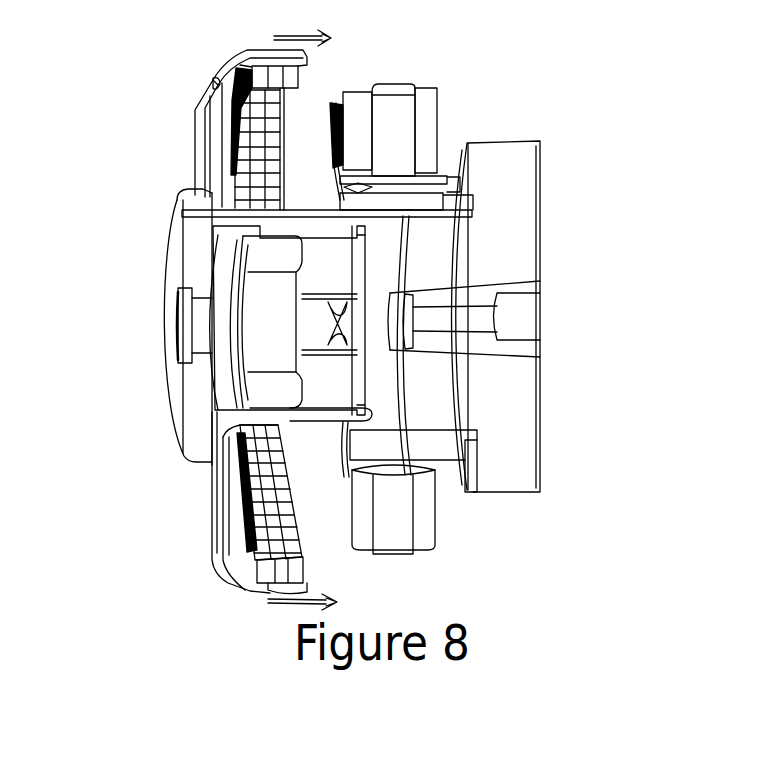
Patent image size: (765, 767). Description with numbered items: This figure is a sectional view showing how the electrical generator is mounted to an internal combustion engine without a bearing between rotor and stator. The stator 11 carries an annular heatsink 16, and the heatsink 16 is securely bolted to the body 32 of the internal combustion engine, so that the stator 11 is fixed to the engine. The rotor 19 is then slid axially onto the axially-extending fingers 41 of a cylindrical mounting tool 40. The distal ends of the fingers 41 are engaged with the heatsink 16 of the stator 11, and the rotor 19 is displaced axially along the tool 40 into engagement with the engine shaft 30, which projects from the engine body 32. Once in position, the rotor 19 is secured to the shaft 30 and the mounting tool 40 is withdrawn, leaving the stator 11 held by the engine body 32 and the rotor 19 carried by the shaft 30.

The stator 11 is at (463, 105).
The heatsink 16 is at (442, 445).
The rotor 19 is at (338, 70).
The shaft 30 is at (503, 290).
The body 32 is at (518, 425).
The cylindrical mounting tool 40 is at (203, 420).
The fingers 41 is at (333, 395).